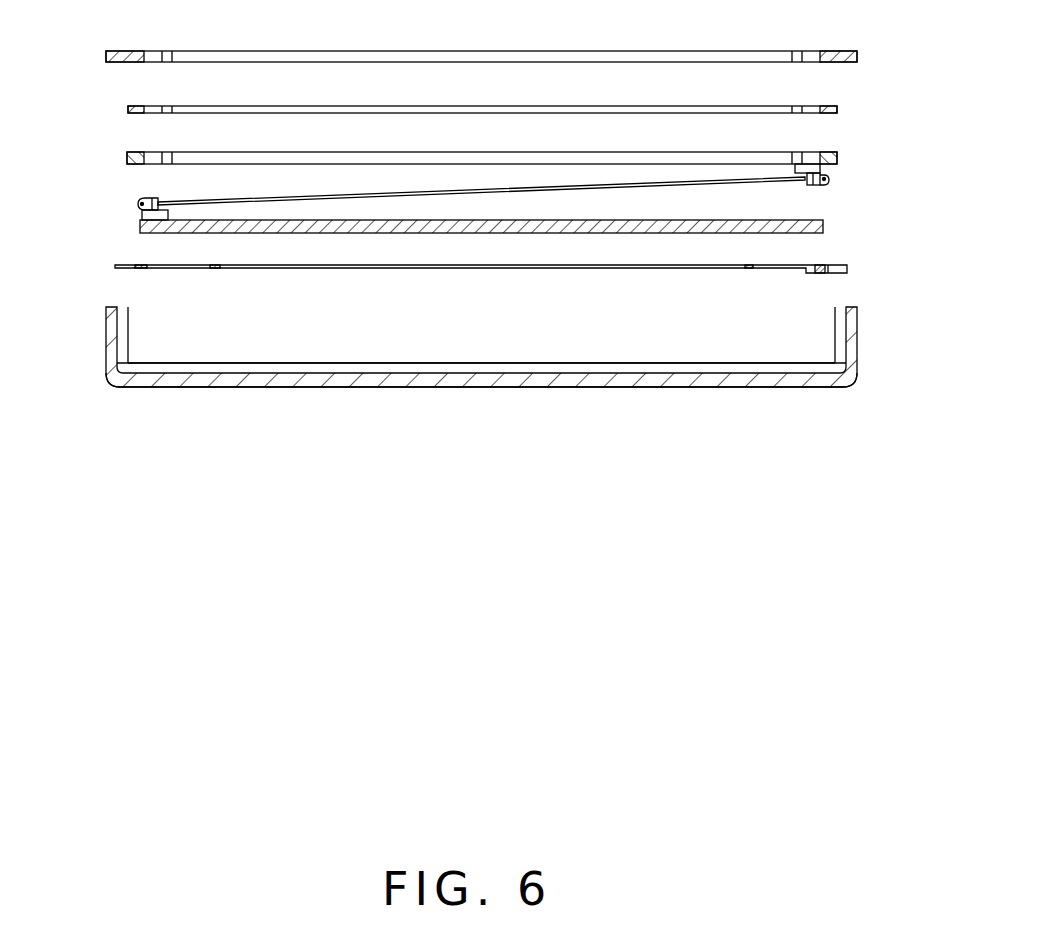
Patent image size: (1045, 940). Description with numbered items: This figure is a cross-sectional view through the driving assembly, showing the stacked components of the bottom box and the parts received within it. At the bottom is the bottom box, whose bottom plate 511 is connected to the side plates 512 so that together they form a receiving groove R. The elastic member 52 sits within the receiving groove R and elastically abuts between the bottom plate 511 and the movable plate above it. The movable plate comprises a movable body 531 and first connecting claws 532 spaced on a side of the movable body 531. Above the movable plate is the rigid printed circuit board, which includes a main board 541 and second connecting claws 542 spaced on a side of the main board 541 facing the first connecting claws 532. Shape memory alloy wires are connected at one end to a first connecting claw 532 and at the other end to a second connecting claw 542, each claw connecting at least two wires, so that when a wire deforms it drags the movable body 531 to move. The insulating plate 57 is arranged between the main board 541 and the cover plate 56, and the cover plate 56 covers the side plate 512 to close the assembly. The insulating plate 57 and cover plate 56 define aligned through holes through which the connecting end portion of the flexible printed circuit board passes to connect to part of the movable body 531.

The cover plate 56 is at (110, 51).
The insulating plate 57 is at (128, 107).
The main board 541 is at (832, 155).
The second connecting claw 542 is at (828, 182).
The first connecting claw 532 is at (138, 206).
The movable body 531 is at (150, 233).
The elastic member 52 is at (117, 267).
The side plate 512 is at (109, 346).
The bottom plate 511 is at (395, 385).
The receiving groove R is at (239, 356).